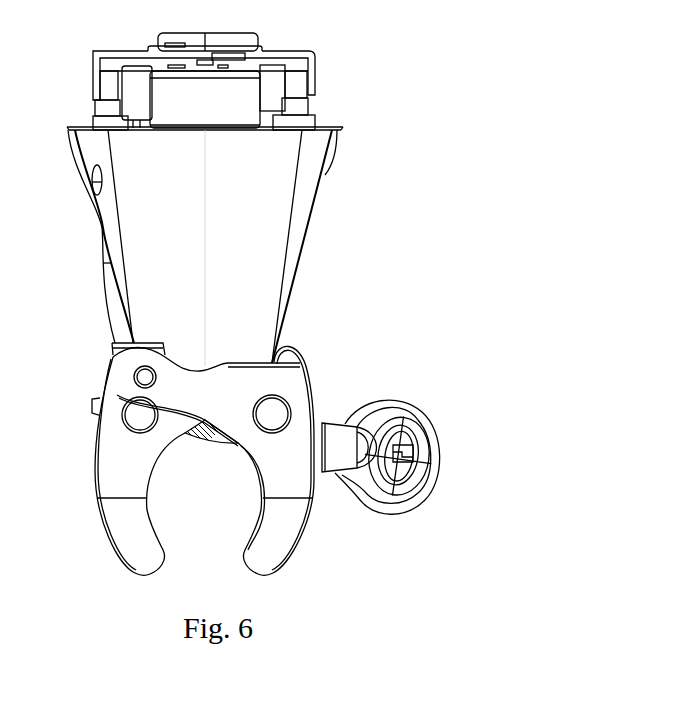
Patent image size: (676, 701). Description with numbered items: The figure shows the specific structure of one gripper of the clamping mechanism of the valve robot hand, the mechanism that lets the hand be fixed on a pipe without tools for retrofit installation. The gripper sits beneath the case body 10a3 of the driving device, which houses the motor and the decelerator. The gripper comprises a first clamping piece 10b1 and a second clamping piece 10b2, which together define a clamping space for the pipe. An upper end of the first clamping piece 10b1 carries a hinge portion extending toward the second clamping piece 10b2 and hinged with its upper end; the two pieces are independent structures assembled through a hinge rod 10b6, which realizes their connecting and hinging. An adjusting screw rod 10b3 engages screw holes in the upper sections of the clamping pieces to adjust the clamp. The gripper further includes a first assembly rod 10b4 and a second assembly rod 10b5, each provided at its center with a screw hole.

The case body 10a3 is at (260, 323).
The first clamping piece 10b1 is at (295, 365).
The second clamping piece 10b2 is at (103, 470).
The adjusting screw rod 10b3 is at (323, 472).
The first assembly rod 10b4 is at (272, 412).
The second assembly rod 10b5 is at (138, 418).
The hinge rod 10b6 is at (140, 379).